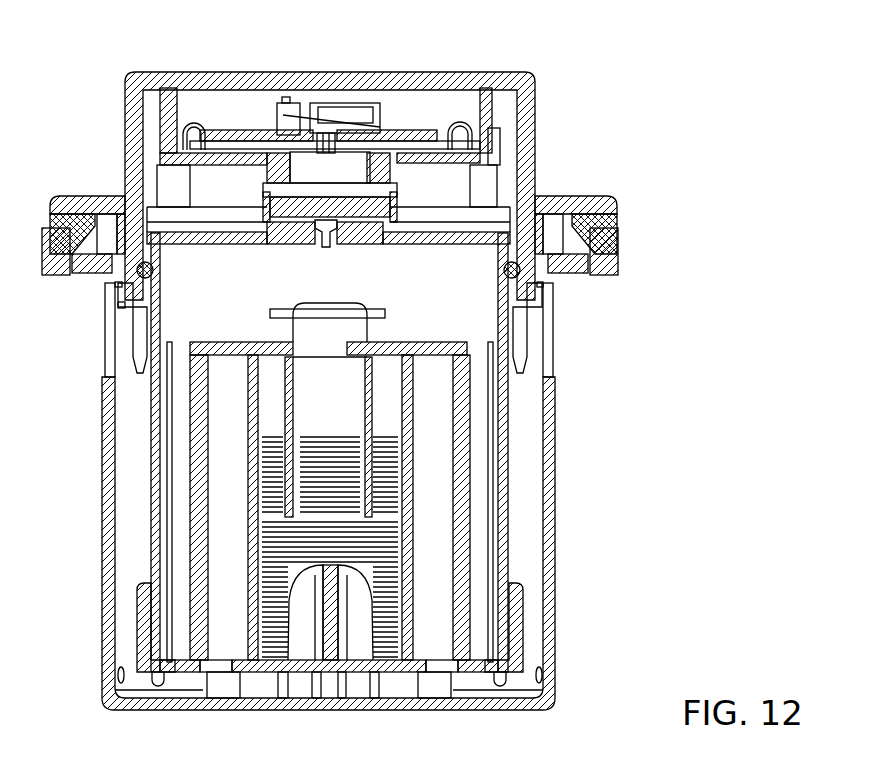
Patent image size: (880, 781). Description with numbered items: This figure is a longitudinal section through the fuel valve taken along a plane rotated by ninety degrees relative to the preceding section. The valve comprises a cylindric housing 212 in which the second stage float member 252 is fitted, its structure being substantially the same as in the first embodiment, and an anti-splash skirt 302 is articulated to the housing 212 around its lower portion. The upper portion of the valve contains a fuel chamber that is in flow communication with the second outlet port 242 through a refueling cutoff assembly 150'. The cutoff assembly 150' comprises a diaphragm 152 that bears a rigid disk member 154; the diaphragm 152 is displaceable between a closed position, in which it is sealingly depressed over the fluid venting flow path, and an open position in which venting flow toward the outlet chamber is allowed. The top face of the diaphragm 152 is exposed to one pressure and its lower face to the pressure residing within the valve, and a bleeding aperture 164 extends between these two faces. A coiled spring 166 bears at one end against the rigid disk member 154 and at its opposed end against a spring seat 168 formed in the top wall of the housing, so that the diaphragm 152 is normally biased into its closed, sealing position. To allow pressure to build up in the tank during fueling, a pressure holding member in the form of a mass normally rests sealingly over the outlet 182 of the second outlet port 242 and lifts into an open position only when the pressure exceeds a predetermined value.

The refueling cutoff assembly 150' is at (362, 126).
The diaphragm 152 is at (535, 92).
The rigid disk member 154 is at (207, 127).
The bleeding aperture 164 is at (327, 136).
The coiled spring 166 is at (357, 101).
The spring seat 168 is at (295, 101).
The outlet of the second outlet port 182 is at (369, 207).
The cylindric housing 212 is at (499, 504).
The second outlet port 242 is at (330, 248).
The second stage float member 252 is at (459, 386).
The anti-splash skirt 302 is at (548, 607).